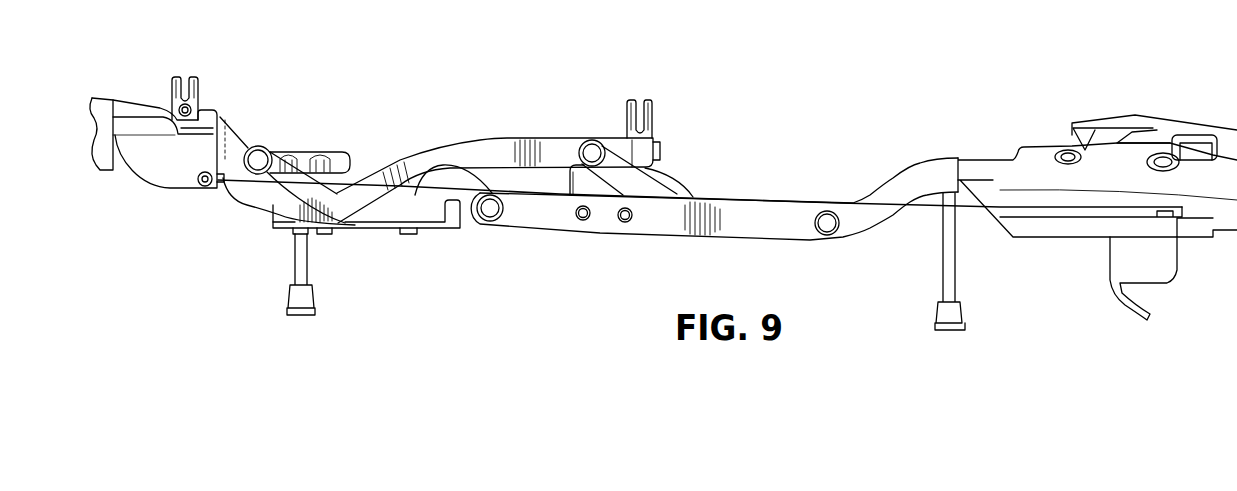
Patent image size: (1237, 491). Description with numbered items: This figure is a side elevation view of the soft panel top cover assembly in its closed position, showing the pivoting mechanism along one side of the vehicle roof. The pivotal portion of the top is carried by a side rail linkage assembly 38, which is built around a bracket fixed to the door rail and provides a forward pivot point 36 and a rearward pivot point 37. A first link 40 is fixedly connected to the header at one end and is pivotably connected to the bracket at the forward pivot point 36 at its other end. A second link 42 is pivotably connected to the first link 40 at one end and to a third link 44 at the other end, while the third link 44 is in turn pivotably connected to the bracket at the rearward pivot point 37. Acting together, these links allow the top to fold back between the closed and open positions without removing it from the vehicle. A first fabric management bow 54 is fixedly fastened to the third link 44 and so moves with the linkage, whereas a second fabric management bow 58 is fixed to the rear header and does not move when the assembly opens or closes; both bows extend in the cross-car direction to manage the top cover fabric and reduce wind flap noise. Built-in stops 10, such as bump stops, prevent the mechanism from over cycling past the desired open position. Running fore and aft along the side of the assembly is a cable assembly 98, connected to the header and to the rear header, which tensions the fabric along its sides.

The stops 10 is at (580, 178).
The forward pivot point 36 is at (490, 215).
The rearward pivot point 37 is at (258, 160).
The side rail linkage assembly 38 is at (588, 78).
The first link 40 is at (693, 236).
The second link 42 is at (640, 183).
The third link 44 is at (530, 152).
The first fabric management bow 54 is at (648, 115).
The second fabric management bow 58 is at (196, 93).
The cable assembly 98 is at (1107, 237).